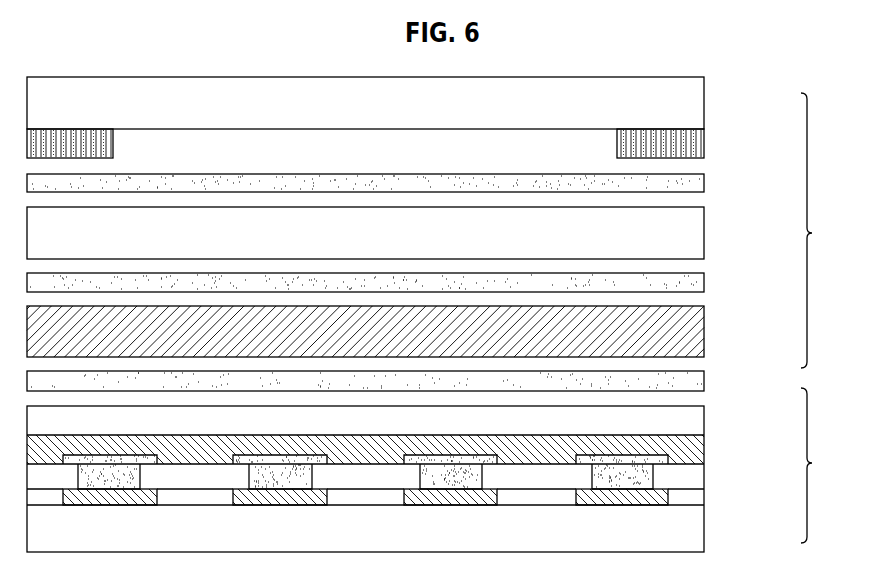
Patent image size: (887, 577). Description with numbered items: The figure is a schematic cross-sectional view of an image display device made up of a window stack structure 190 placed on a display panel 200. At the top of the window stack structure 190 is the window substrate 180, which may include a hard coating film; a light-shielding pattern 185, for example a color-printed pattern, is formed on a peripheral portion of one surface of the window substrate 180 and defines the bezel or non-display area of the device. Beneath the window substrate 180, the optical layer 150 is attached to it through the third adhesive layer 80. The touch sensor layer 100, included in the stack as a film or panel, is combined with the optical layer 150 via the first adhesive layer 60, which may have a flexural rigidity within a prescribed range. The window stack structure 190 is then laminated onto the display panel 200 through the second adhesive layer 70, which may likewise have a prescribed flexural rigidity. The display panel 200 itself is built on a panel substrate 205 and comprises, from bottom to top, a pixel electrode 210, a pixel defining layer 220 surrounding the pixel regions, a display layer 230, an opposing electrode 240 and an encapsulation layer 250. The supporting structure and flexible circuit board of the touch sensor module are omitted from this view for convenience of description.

The window substrate 180 is at (697, 103).
The light-shielding pattern 185 is at (703, 138).
The third adhesive layer 80 is at (700, 180).
The optical layer 150 is at (697, 232).
The window stack structure 190 is at (830, 230).
The first adhesive layer 60 is at (700, 280).
The touch sensor layer 100 is at (697, 326).
The second adhesive layer 70 is at (697, 383).
The display panel 200 is at (443, 470).
The encapsulation layer 250 is at (697, 422).
The opposing electrode 240 is at (697, 445).
The display layer 230 is at (633, 458).
The pixel defining layer 220 is at (697, 476).
The pixel electrode 210 is at (670, 494).
The panel substrate 205 is at (697, 530).